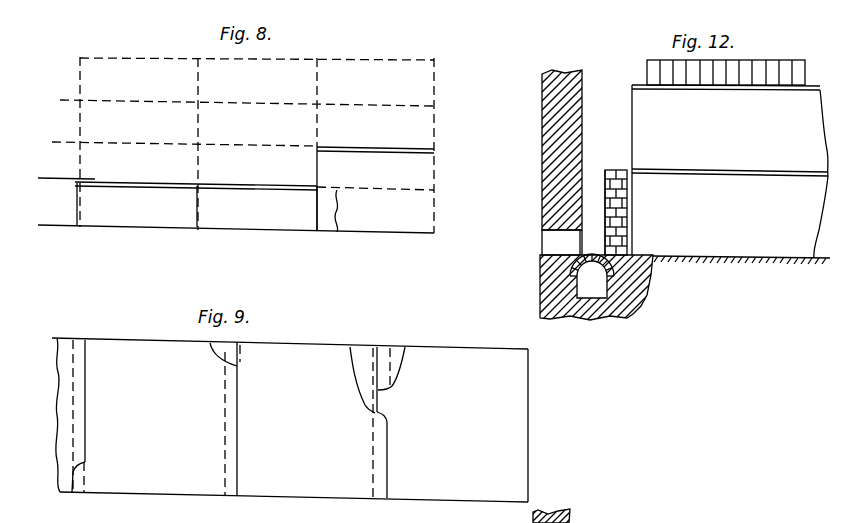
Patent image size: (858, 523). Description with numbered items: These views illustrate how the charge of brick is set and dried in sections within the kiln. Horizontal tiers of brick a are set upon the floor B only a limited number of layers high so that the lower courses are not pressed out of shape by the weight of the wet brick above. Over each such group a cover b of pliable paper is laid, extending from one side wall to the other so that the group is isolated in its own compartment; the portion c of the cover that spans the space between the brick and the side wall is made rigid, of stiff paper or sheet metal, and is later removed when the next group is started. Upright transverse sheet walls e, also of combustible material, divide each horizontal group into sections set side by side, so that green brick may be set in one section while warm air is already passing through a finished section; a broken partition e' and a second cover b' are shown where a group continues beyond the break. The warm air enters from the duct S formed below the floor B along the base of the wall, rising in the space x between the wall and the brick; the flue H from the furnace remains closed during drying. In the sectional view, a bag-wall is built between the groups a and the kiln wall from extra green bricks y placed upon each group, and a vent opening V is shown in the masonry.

In FIG. 8, the horizontal tiers of brick a is at (243, 145).
In FIG. 12, the horizontal tiers of brick a is at (730, 171).
In FIG. 8, the cover b is at (236, 190).
In FIG. 12, the cover b is at (730, 134).
In FIG. 9, the cover b is at (290, 420).
In FIG. 12, the facing slab joint b' is at (732, 100).
In FIG. 8, the transverse sheet wall e is at (117, 219).
In FIG. 8, the broken vertical joint e' is at (301, 208).
In FIG. 12, the rigid cover section c is at (559, 151).
In FIG. 12, the air space x is at (593, 206).
In FIG. 12, the flue H is at (541, 247).
In FIG. 12, the ventilating channel V is at (556, 268).
In FIG. 12, the duct S is at (592, 276).
In FIG. 12, the floor B is at (654, 287).
In FIG. 12, the brick pier y is at (692, 146).